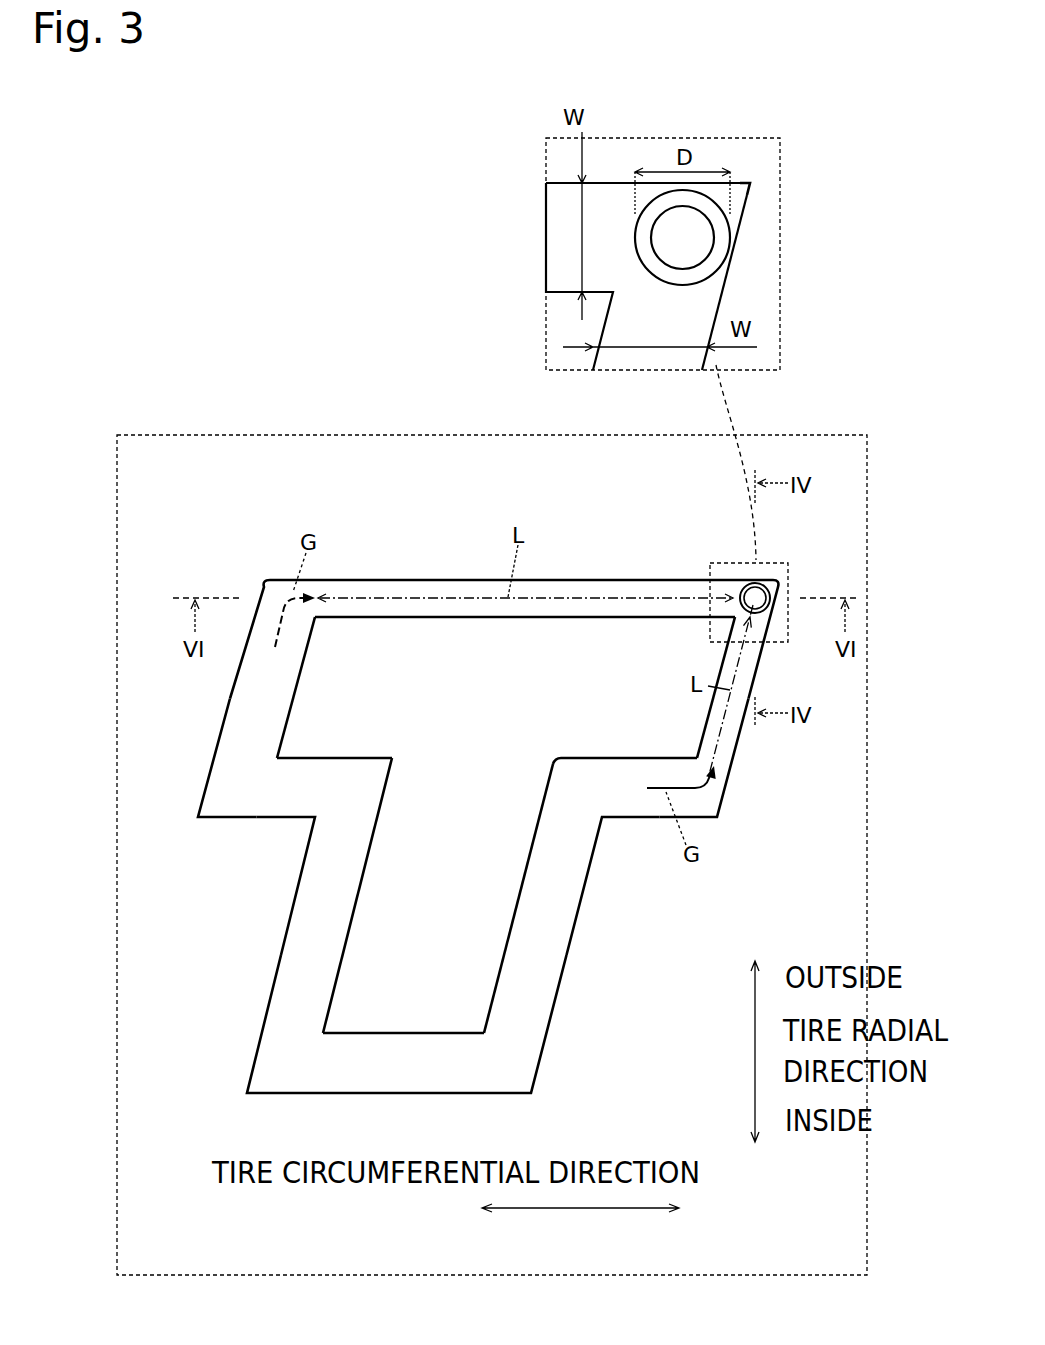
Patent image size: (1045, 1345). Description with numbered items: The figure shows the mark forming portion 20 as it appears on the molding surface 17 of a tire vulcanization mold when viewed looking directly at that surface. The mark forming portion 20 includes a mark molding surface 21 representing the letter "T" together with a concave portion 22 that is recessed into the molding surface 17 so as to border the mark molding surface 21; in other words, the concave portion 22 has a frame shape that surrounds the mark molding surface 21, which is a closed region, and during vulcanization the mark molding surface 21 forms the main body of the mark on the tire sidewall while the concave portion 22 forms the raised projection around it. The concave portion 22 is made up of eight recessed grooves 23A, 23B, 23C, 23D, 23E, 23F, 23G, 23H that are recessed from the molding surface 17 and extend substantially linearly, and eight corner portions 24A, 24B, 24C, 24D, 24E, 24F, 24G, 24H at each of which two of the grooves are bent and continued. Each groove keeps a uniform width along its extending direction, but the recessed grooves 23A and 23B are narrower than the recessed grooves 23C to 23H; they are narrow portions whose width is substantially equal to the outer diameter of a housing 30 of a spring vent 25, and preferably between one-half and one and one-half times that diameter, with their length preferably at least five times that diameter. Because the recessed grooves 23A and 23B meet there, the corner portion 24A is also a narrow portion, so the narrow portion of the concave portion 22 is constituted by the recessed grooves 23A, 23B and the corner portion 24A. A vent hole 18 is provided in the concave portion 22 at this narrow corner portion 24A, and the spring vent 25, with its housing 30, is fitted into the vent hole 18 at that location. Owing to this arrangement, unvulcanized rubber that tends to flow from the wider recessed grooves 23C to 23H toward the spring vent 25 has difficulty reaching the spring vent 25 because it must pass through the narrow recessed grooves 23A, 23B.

The molding surface 17 is at (656, 1001).
The vent hole 18 is at (728, 238).
The mark forming portion 20 is at (628, 530).
The mark molding surface 21 is at (478, 775).
The concave portion 22 is at (555, 608).
The recessed groove 23A is at (735, 720).
The recessed groove 23B is at (452, 600).
The recessed groove 23C is at (252, 697).
The recessed groove 23D is at (305, 790).
The recessed groove 23E is at (308, 915).
The recessed groove 23F is at (393, 1050).
The recessed groove 23G is at (558, 918).
The recessed groove 23H is at (598, 775).
The corner portion 24A is at (780, 583).
The corner portion 24B is at (283, 592).
The corner portion 24C is at (225, 795).
The corner portion 24D is at (352, 775).
The corner portion 24E is at (272, 1068).
The corner portion 24F is at (517, 1077).
The corner portion 24G is at (567, 765).
The corner portion 24H is at (720, 803).
The spring vent 25 is at (696, 252).
The housing 30 is at (712, 252).